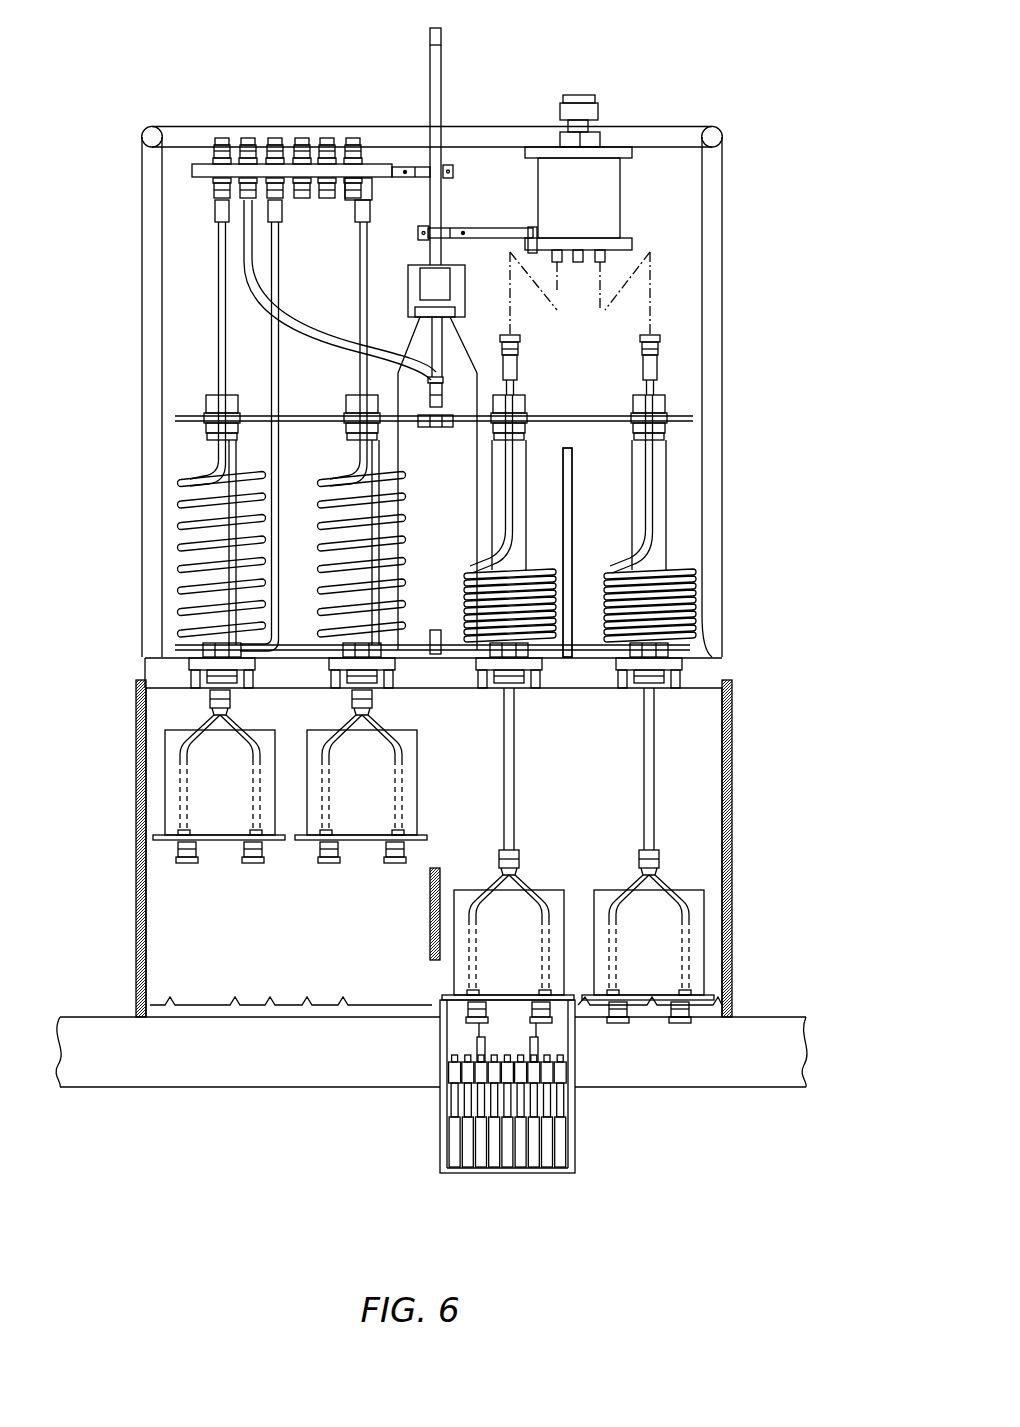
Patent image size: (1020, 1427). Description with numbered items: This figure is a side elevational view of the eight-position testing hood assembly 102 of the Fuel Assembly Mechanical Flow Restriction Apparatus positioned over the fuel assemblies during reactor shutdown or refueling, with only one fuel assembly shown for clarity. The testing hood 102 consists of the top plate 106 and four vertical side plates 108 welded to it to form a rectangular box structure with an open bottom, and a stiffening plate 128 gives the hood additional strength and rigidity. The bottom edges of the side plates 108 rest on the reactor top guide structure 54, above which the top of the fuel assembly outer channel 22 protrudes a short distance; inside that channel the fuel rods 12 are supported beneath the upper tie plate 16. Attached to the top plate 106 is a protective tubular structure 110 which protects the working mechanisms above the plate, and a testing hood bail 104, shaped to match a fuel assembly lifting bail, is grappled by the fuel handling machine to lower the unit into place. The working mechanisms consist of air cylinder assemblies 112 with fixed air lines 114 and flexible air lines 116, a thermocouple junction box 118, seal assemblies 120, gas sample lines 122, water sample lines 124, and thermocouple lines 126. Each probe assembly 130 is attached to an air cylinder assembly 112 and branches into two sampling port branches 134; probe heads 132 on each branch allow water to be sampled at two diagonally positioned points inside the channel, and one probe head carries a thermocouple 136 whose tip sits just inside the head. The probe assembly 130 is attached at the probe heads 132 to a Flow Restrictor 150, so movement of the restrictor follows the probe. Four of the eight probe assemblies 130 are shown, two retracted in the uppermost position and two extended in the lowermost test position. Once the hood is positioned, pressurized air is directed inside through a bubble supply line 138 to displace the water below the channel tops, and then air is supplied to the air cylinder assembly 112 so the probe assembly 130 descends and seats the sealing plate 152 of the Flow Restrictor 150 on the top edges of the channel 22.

The testing hood bail 104 is at (443, 75).
The protective tubular structure 110 is at (714, 97).
The thermocouple junction box 118 is at (620, 200).
The thermocouple lines 126 is at (655, 295).
The air cylinder assembly 112 is at (668, 443).
The bubble supply line 138 is at (573, 552).
The gas sample lines 122 is at (567, 552).
The flexible air lines 116 is at (693, 573).
The top plate 106 is at (728, 660).
The seal assemblies 120 is at (657, 693).
The vertical side plates 108 is at (730, 790).
The sampling port branches 134 is at (630, 870).
The Flow Restrictor 150 is at (563, 942).
The probe assembly 130 is at (660, 860).
The stiffening plate 128 is at (430, 912).
The probe heads 132 is at (188, 867).
The thermocouple 136 is at (252, 867).
The reactor top guide structure 54 is at (785, 1072).
The upper tie plate 16 is at (537, 1077).
The sealing plate 152 is at (445, 995).
The outer channel 22 is at (437, 1157).
The fuel rods 12 is at (548, 1160).
The water sample lines 124 is at (217, 300).
The fixed air lines 114 is at (312, 412).
The testing hood assembly 102 is at (108, 746).